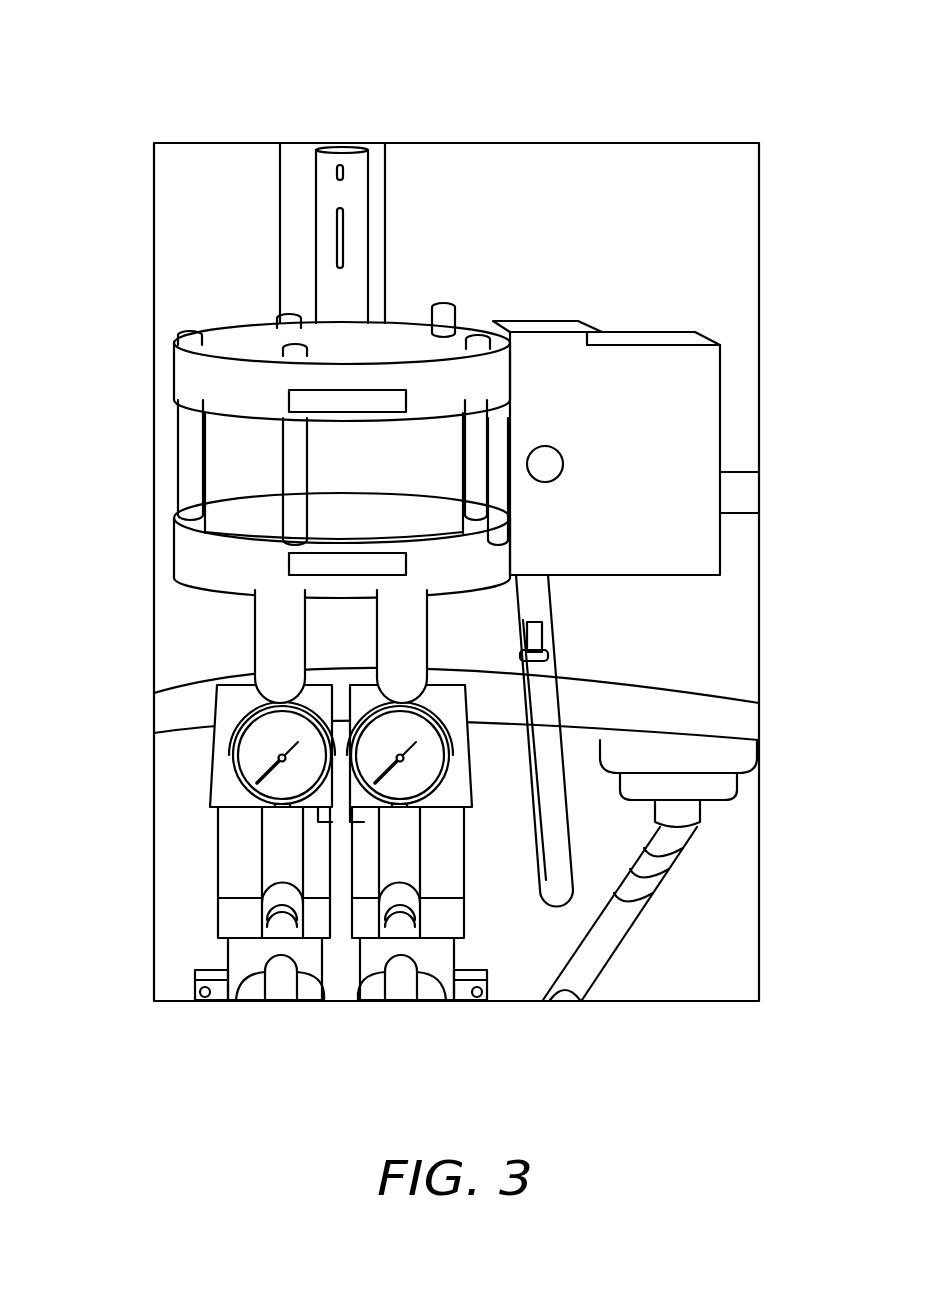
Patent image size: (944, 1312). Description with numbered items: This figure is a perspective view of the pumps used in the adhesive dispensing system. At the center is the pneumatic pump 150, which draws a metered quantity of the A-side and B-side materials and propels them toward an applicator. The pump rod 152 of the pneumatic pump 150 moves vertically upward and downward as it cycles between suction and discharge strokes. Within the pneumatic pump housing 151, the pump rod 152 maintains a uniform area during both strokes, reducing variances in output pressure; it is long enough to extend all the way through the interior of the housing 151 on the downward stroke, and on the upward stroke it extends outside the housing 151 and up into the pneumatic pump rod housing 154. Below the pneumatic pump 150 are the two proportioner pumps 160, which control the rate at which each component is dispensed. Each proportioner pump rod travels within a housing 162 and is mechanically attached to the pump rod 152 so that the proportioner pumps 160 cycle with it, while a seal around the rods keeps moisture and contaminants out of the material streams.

The pneumatic pump 150 is at (188, 375).
The pneumatic pump housing 151 is at (248, 475).
The pump rod 152 is at (340, 238).
The pneumatic pump rod housing 154 is at (327, 192).
The proportioner pumps 160 is at (312, 840).
The proportioner pump rod housing 162 is at (268, 648).